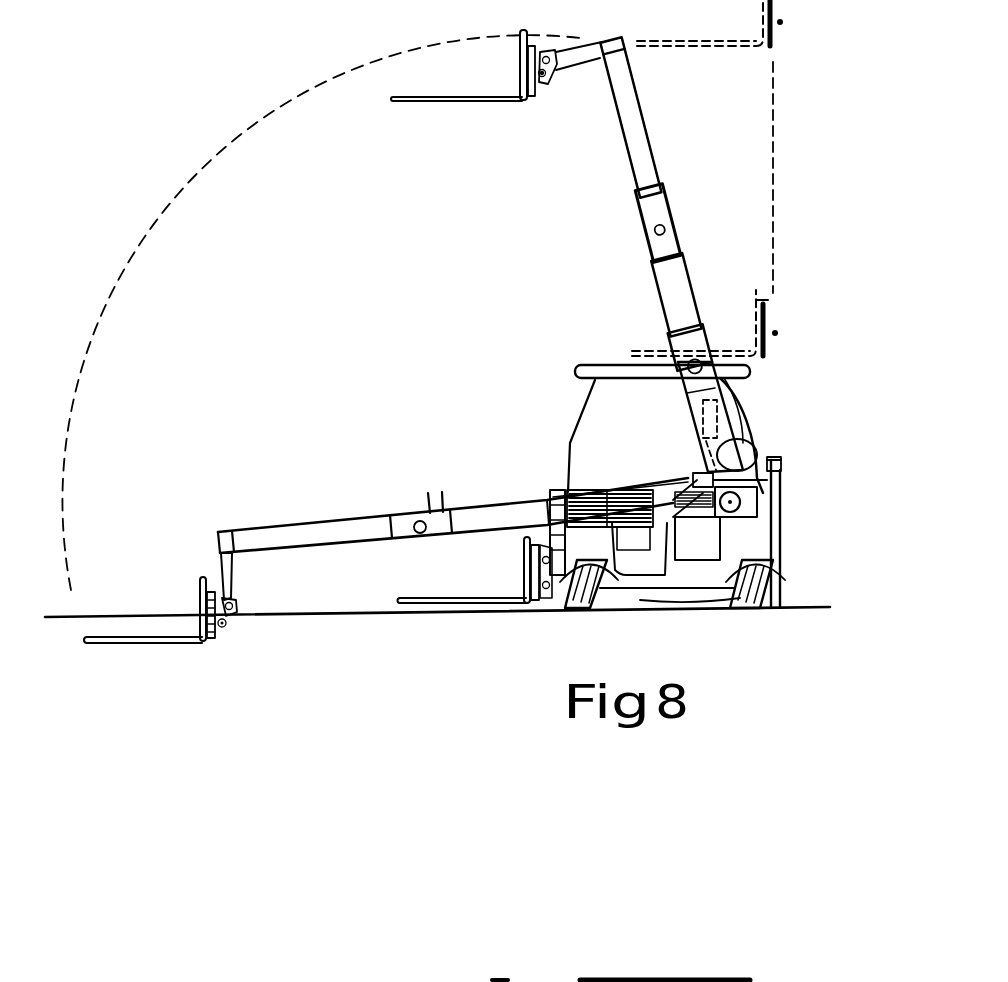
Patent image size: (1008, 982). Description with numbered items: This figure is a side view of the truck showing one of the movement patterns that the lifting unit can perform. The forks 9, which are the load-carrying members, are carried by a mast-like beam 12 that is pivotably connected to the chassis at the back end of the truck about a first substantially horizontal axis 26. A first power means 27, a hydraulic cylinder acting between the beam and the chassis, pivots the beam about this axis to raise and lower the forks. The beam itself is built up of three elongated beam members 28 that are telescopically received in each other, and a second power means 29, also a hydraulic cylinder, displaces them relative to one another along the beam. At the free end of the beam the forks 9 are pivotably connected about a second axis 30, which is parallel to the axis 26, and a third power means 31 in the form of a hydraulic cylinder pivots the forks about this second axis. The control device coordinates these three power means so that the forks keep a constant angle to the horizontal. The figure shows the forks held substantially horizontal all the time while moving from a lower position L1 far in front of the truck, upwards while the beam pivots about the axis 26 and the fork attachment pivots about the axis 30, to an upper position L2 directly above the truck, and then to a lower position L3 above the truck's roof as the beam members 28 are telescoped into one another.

The forks 9 is at (165, 643).
The mast-like beam 12 is at (688, 266).
The first substantially horizontal axis 26 is at (741, 503).
The first power means 27 is at (724, 445).
The elongated beam members 28 is at (653, 168).
The second power means 29 is at (707, 418).
The second axis 30 is at (232, 617).
The third power means 31 is at (232, 584).
The lower position L1 is at (92, 633).
The upper position L2 is at (784, 40).
The lower position above the truck's roof L3 is at (780, 338).